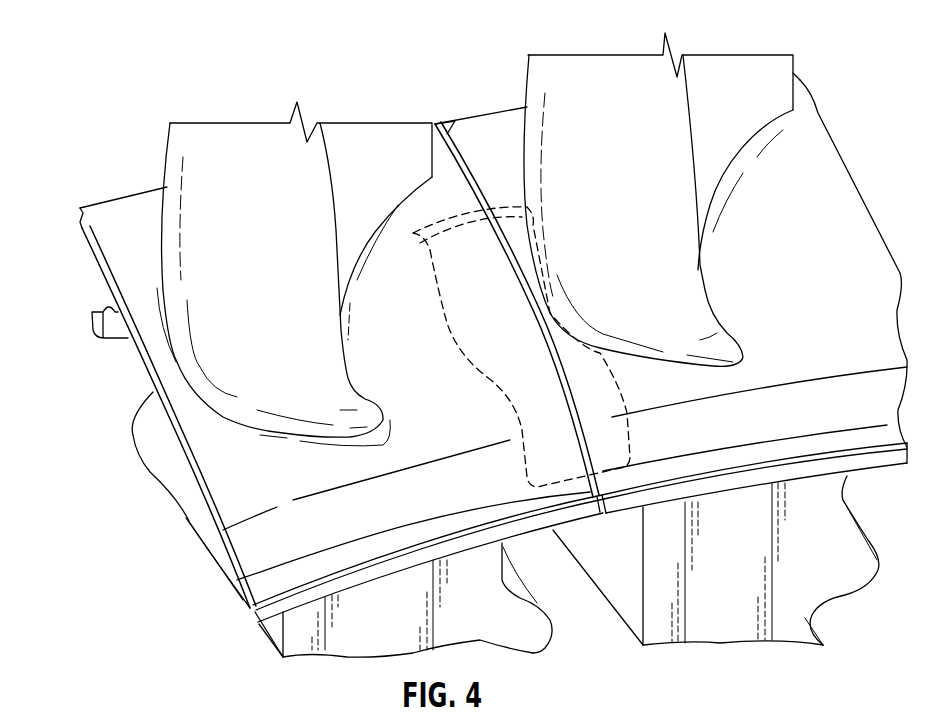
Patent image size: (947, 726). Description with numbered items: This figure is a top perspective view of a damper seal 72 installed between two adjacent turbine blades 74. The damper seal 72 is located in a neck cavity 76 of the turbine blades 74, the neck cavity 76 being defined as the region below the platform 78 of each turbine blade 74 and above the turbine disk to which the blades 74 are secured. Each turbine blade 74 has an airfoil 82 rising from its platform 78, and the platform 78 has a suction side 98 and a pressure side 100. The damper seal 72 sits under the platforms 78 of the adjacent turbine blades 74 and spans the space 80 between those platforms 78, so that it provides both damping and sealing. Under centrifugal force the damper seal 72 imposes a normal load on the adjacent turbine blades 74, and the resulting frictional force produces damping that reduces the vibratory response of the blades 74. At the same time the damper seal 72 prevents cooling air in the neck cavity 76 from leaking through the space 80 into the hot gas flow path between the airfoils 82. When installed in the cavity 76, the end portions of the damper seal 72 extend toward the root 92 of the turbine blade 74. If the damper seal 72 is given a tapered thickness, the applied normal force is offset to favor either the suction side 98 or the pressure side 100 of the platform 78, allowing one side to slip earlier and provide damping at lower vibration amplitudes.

The turbine blades 74 is at (79, 200).
The suction side 98 is at (133, 208).
The pressure side 100 is at (427, 372).
The airfoils 82 is at (193, 225).
The neck cavity 76 is at (131, 371).
The space 80 is at (440, 123).
The platform 78 is at (226, 455).
The root 92 is at (380, 594).
The damper seal 72 is at (484, 368).